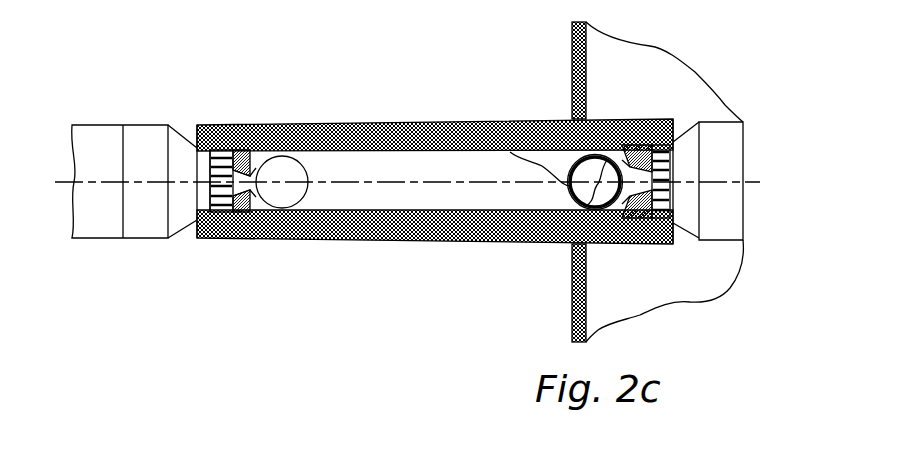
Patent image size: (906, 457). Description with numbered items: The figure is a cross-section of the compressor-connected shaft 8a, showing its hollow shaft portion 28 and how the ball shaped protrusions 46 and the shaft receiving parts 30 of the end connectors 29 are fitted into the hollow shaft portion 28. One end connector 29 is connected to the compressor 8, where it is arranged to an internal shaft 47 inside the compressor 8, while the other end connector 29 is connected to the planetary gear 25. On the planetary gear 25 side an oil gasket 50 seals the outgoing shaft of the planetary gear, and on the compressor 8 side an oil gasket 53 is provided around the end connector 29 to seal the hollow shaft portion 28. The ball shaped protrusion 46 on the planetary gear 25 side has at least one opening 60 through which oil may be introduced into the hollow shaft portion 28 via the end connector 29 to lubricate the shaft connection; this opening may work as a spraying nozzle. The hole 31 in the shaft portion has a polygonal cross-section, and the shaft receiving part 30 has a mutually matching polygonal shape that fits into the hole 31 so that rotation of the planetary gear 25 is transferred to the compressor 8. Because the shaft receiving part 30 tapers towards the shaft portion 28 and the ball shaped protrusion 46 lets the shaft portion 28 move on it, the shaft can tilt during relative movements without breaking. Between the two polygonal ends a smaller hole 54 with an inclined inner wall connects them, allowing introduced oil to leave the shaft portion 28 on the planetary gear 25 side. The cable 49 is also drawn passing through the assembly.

The compressor 8 is at (126, 192).
The compressor-connected shaft 8a is at (394, 243).
The planetary gear 25 is at (658, 50).
The hollow shaft portion 28 is at (393, 122).
The end connector 29 is at (147, 124).
The shaft receiving part 30 is at (236, 147).
The opening/hole 31 is at (242, 150).
The ball shaped protrusion 46 is at (272, 170).
The internal shaft 47 is at (85, 130).
The cable 49 is at (510, 152).
The oil gasket 50 is at (570, 251).
The oil gasket 53 is at (208, 126).
The smaller hole 54 is at (455, 165).
The opening 60 is at (657, 155).